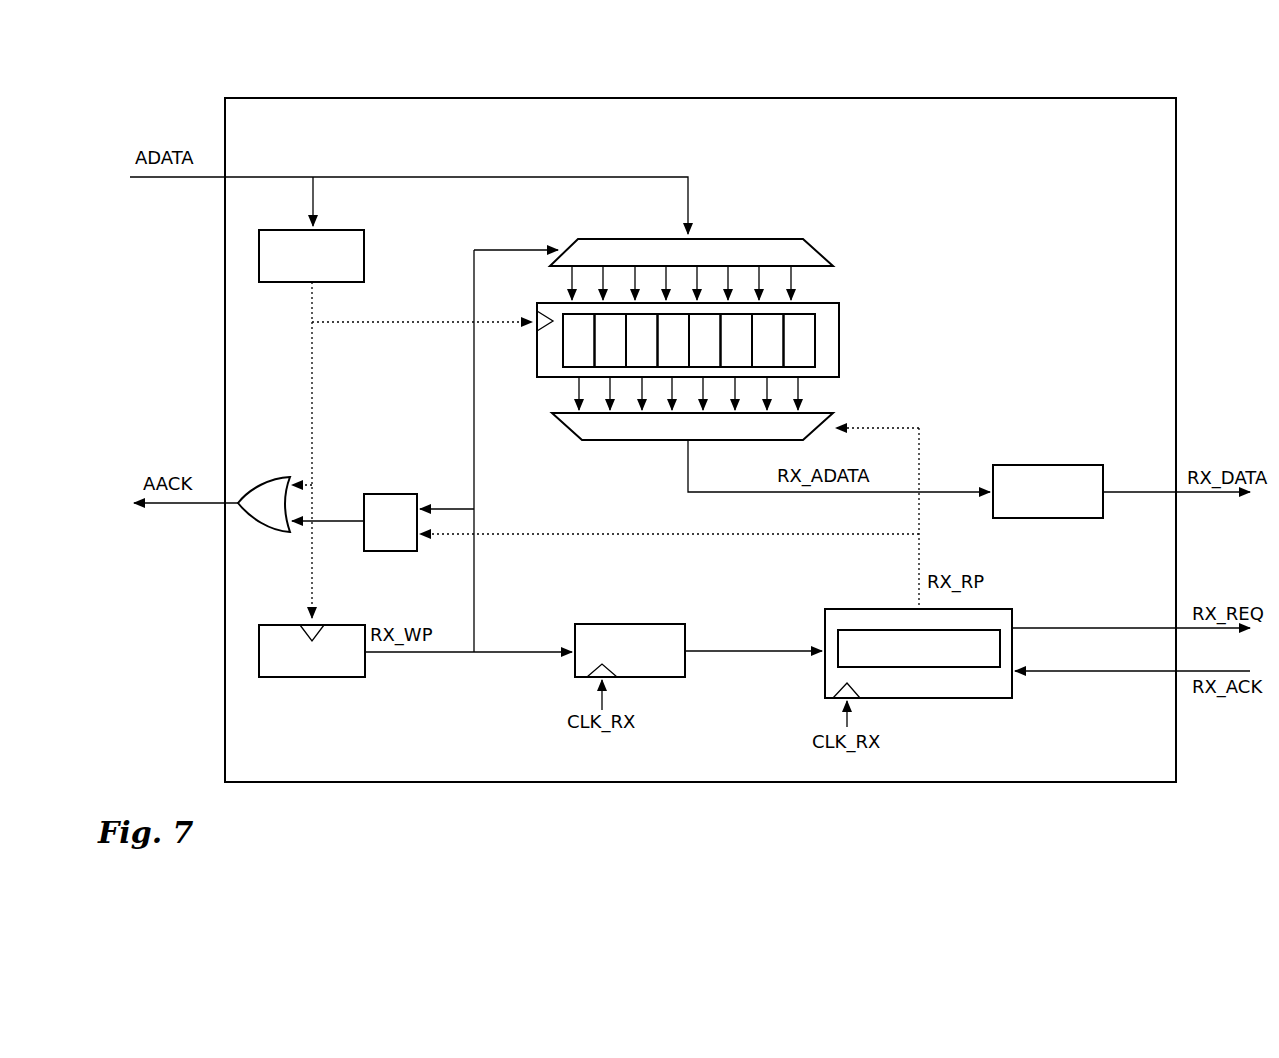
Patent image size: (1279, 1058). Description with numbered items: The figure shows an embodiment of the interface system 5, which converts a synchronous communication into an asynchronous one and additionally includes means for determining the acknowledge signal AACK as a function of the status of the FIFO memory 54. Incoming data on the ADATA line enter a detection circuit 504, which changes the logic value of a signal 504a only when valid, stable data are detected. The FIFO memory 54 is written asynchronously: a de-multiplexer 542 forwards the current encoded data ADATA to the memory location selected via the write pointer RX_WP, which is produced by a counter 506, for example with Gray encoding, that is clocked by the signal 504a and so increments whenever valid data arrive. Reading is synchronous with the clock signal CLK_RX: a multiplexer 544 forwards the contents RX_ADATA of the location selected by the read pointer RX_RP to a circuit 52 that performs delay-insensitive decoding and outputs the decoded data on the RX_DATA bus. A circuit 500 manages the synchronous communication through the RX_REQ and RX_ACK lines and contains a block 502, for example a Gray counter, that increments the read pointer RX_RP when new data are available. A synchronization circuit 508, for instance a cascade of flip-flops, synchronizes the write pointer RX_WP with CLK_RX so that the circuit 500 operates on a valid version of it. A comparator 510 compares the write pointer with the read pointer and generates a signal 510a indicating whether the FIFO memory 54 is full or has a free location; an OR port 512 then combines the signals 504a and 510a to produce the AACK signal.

The interface system 5 is at (812, 95).
The detection circuit 504 is at (340, 242).
The signal 504a is at (318, 388).
The de-multiplexer 542 is at (576, 240).
The FIFO memory 54 is at (840, 342).
The multiplexer 544 is at (598, 442).
The circuit for implementing delay-insensitive decoding 52 is at (1073, 478).
The OR port 512 is at (268, 495).
The comparator 510 is at (395, 505).
The signal 510a is at (328, 526).
The counter 506 is at (287, 678).
The synchronization circuit 508 is at (597, 636).
The circuit 500 is at (982, 620).
The block 502 is at (880, 636).